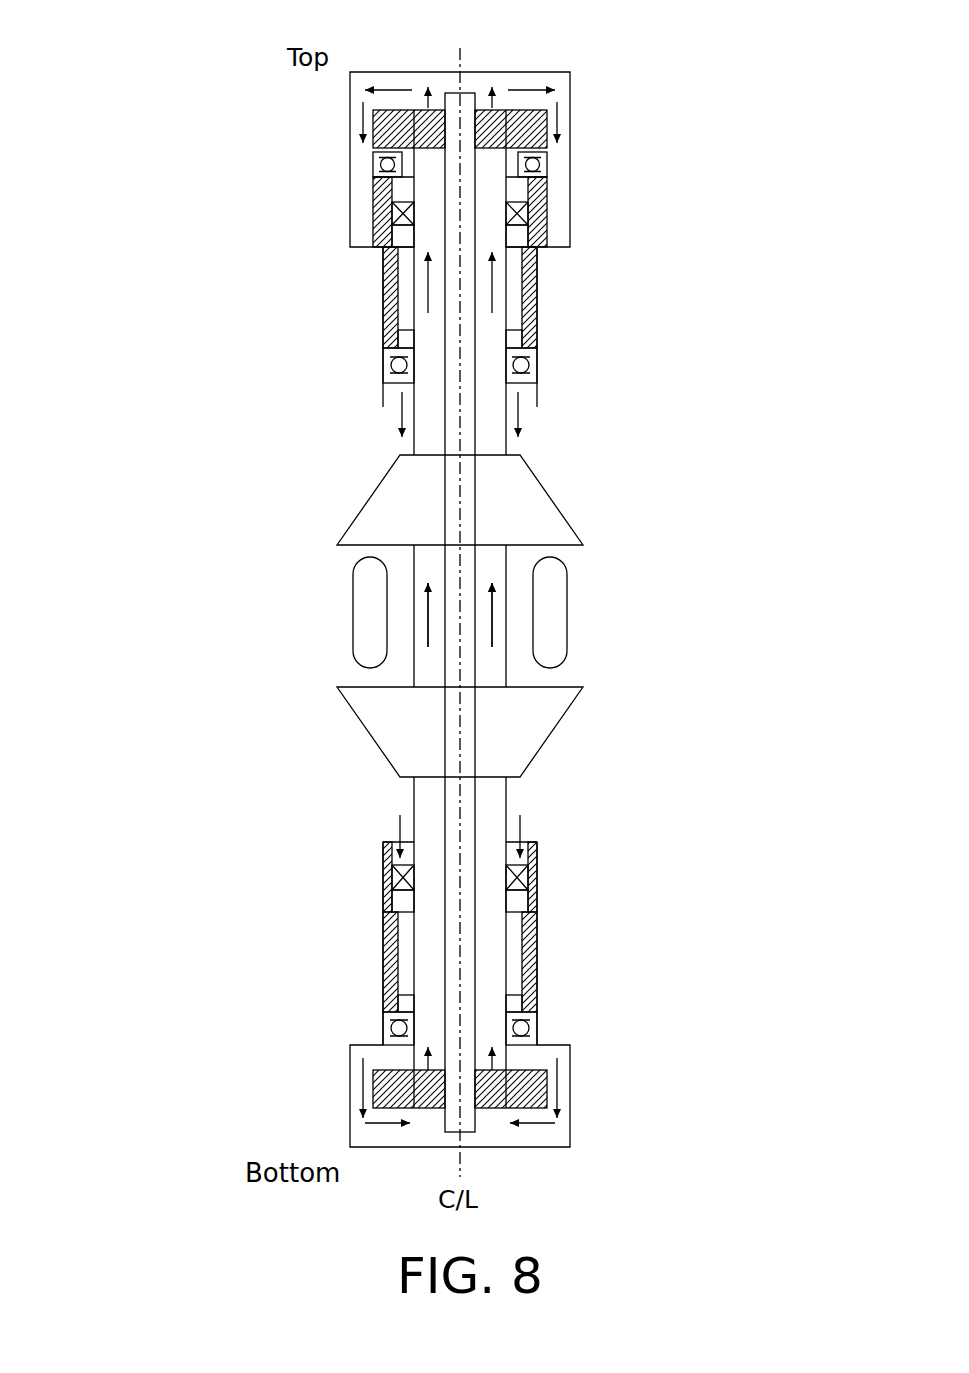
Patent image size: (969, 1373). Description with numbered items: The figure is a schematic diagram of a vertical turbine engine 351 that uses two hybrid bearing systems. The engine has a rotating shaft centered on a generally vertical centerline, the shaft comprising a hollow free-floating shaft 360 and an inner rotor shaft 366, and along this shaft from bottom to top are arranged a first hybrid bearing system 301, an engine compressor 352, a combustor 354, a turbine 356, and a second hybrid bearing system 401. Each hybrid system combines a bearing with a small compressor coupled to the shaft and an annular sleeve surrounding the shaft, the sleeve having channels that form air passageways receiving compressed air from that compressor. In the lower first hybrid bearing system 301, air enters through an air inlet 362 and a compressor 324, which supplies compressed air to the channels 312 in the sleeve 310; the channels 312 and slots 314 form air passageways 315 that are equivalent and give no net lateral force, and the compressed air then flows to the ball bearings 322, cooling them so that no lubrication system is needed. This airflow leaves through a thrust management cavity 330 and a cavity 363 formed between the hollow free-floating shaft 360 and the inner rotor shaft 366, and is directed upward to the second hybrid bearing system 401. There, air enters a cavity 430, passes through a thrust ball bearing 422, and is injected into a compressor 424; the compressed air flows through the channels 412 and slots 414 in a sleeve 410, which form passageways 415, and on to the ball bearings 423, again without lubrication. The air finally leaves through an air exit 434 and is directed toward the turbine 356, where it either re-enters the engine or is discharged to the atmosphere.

The vertical turbine engine 351 is at (167, 77).
The second hybrid bearing system 401 is at (680, 184).
The first hybrid bearing system 301 is at (680, 970).
The cavity 430 is at (561, 80).
The thrust management cavity 330 is at (552, 1137).
The thrust ball bearing 422 is at (374, 169).
The ball bearings 423 is at (383, 367).
The compressor 424 is at (547, 219).
The channels 412 is at (408, 264).
The sleeve 410 is at (393, 301).
The air passageways 415 is at (530, 270).
The slots 414 is at (530, 339).
The air exit 434 is at (394, 409).
The inner rotor shaft 366 is at (482, 437).
The turbine 356 is at (567, 512).
The combustor 354 is at (580, 618).
The engine compressor 352 is at (570, 717).
The cavity 363 is at (430, 815).
The hollow free-floating shaft 360 is at (510, 797).
The air inlet 362 is at (393, 833).
The compressor 324 is at (525, 878).
The channels 312 is at (408, 932).
The sleeve 310 is at (393, 977).
The air passageways 315 is at (520, 935).
The slots 314 is at (525, 1003).
The ball bearings 322 is at (388, 1023).